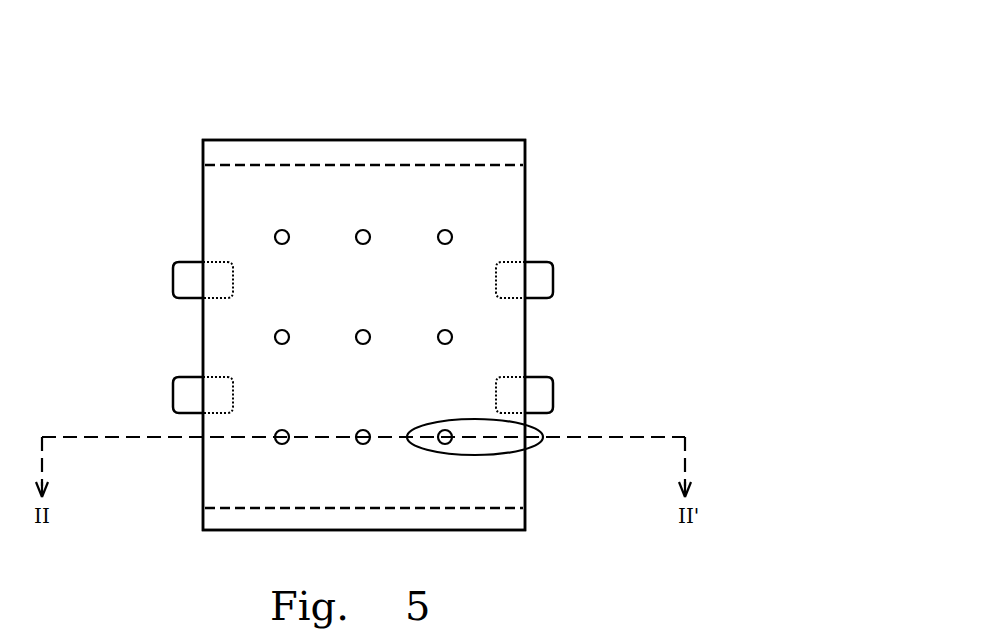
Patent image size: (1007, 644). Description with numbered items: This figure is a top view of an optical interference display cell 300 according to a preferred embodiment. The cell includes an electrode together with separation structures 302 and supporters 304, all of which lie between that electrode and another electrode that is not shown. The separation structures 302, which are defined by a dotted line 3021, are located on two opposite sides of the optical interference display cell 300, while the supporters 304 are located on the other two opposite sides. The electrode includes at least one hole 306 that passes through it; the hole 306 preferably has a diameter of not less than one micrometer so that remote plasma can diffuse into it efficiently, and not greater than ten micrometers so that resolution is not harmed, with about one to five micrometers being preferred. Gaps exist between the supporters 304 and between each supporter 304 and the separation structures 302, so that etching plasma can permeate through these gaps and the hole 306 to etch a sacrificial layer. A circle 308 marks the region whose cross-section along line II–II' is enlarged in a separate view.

The optical interference display cell 300 is at (571, 126).
The separation structures 302 is at (510, 153).
The dotted line 3021 is at (242, 165).
The supporters 304 is at (190, 283).
The hole 306 is at (275, 337).
The circle 308 is at (447, 457).